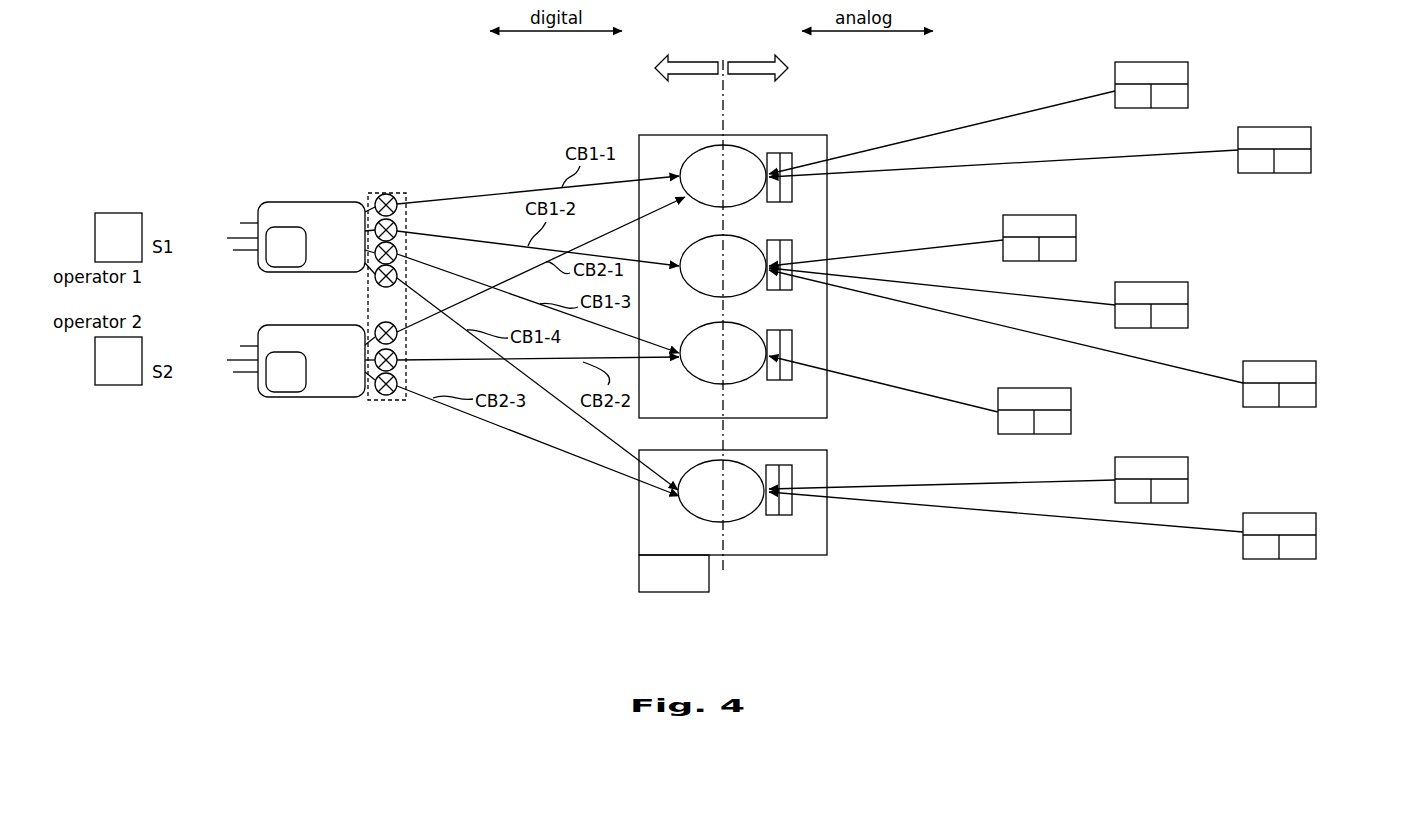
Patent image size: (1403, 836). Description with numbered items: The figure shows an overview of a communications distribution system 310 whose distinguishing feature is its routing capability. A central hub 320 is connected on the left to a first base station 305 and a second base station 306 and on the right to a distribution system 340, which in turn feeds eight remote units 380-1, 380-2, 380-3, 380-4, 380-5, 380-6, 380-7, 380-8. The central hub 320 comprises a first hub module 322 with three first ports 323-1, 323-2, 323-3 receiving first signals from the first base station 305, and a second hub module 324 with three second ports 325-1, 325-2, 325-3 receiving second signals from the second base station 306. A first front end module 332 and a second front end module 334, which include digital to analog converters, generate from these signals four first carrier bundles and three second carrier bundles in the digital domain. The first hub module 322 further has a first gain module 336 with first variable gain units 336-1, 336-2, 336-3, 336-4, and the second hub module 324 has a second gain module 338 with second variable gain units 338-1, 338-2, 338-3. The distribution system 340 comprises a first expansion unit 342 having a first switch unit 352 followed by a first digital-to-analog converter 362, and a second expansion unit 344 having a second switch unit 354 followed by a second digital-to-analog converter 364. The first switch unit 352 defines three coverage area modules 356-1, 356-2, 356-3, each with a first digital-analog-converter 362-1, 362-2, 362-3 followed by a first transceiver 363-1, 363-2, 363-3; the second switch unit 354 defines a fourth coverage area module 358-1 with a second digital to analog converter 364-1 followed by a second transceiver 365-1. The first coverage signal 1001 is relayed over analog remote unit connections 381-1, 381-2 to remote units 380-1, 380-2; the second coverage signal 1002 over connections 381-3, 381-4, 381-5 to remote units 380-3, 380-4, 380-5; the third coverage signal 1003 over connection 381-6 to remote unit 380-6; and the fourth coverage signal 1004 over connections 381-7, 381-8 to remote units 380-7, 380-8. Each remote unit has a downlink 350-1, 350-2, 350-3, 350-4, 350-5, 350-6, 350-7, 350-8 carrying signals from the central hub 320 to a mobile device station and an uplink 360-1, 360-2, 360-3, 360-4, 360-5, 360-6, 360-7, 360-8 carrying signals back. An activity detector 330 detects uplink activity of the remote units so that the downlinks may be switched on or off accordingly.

The first base station 305 is at (118, 213).
The second base station 306 is at (118, 385).
The communications distribution system 310 is at (332, 131).
The central hub 320 is at (303, 444).
The first hub module 322 is at (290, 202).
The first port 323-1 is at (252, 223).
The first port 323-2 is at (240, 238).
The first port 323-3 is at (252, 250).
The second hub module 324 is at (347, 325).
The second port 325-1 is at (252, 346).
The second port 325-2 is at (240, 360).
The second port 325-3 is at (252, 372).
The activity detector 330 is at (660, 592).
The first front end module 332 is at (285, 268).
The second front end module 334 is at (285, 392).
The first gain module 336 is at (368, 195).
The first variable gain unit 336-1 is at (398, 194).
The first variable gain unit 336-2 is at (402, 229).
The first variable gain unit 336-3 is at (402, 256).
The first variable gain unit 336-4 is at (400, 281).
The second gain module 338 is at (368, 398).
The second variable gain unit 338-1 is at (400, 335).
The second variable gain unit 338-2 is at (400, 365).
The second variable gain unit 338-3 is at (391, 397).
The distribution system 340 is at (748, 565).
The first expansion unit 342 is at (639, 420).
The second expansion unit 344 is at (639, 533).
The downlink 350-1 is at (1115, 105).
The downlink 350-2 is at (1258, 173).
The downlink 350-3 is at (1008, 262).
The downlink 350-4 is at (1130, 328).
The downlink 350-5 is at (1248, 408).
The downlink 350-6 is at (998, 432).
The downlink 350-7 is at (1128, 505).
The downlink 350-8 is at (1248, 560).
The first switch unit 352 is at (815, 143).
The second switch unit 354 is at (815, 508).
The first coverage area module 356-1 is at (703, 201).
The second coverage area module 356-2 is at (703, 291).
The third coverage area module 356-3 is at (703, 382).
The fourth coverage area module 358-1 is at (703, 509).
The uplink 360-1 is at (1167, 100).
The uplink 360-2 is at (1300, 173).
The uplink 360-3 is at (1076, 249).
The uplink 360-4 is at (1188, 318).
The uplink 360-5 is at (1317, 400).
The uplink 360-6 is at (1072, 428).
The uplink 360-7 is at (1165, 505).
The uplink 360-8 is at (1317, 550).
The first digital-to-analog converter 362 is at (766, 126).
The first digital-analog-converter 362-1 is at (771, 152).
The first digital-analog-converter 362-2 is at (775, 240).
The first digital-analog-converter 362-3 is at (775, 330).
The first transceiver 363-1 is at (788, 152).
The first transceiver 363-2 is at (787, 255).
The first transceiver 363-3 is at (787, 350).
The second digital-to-analog converter 364 is at (773, 518).
The second digital to analog converter 364-1 is at (775, 468).
The second transceiver 365-1 is at (790, 479).
The first remote unit 380-1 is at (1180, 45).
The second remote unit 380-2 is at (1280, 127).
The third remote unit 380-3 is at (1045, 215).
The fourth remote unit 380-4 is at (1150, 282).
The fifth remote unit 380-5 is at (1280, 361).
The sixth remote unit 380-6 is at (1060, 388).
The seventh remote unit 380-7 is at (1150, 457).
The eighth remote unit 380-8 is at (1280, 513).
The first remote unit connection 381-1 is at (1037, 109).
The second remote unit connection 381-2 is at (1212, 151).
The third remote unit connection 381-3 is at (970, 243).
The fourth remote unit connection 381-4 is at (1090, 302).
The fifth remote unit connection 381-5 is at (1207, 373).
The sixth remote unit connection 381-6 is at (968, 405).
The seventh remote unit connection 381-7 is at (1092, 480).
The eighth remote unit connection 381-8 is at (1208, 529).
The first coverage signal 1001 is at (1003, 134).
The second coverage signal 1002 is at (1006, 302).
The third coverage signal 1003 is at (883, 384).
The fourth coverage signal 1004 is at (1006, 496).